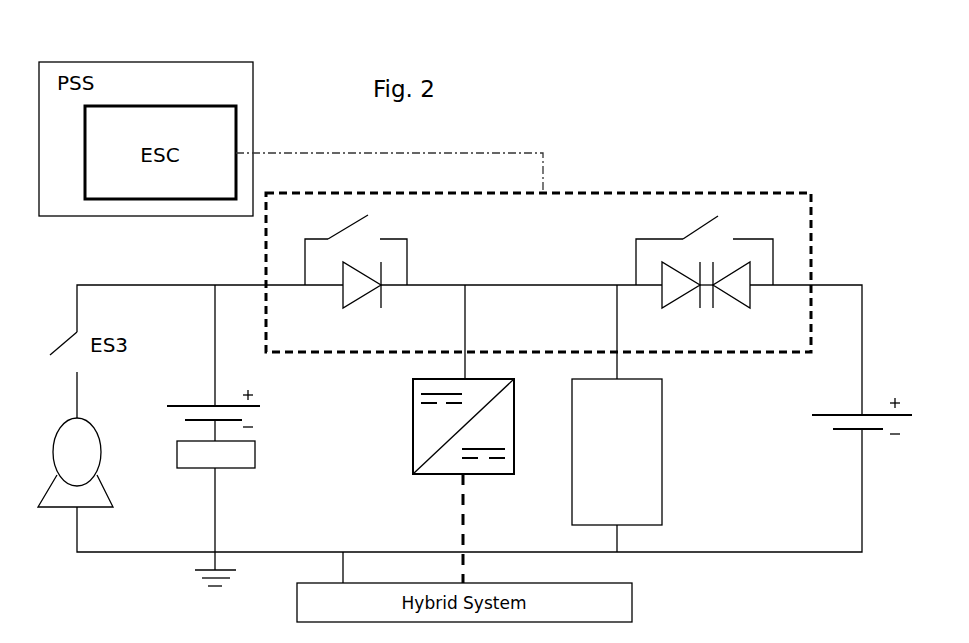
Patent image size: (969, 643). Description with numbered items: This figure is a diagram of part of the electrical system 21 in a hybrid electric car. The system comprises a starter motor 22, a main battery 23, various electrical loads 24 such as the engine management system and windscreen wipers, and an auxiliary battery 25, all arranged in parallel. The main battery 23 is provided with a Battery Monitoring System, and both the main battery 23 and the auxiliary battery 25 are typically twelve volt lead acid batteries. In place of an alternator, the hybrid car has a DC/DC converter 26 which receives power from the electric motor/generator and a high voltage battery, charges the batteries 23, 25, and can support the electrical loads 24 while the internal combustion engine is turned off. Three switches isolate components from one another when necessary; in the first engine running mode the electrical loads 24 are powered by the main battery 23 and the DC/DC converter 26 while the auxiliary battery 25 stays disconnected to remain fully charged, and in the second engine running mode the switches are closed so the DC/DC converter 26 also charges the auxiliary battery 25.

The electrical system 21 is at (778, 148).
The starter motor 22 is at (108, 465).
The main battery 23 is at (267, 425).
The electrical loads 24 is at (667, 464).
The auxiliary battery 25 is at (837, 437).
The DC/DC converter 26 is at (515, 480).